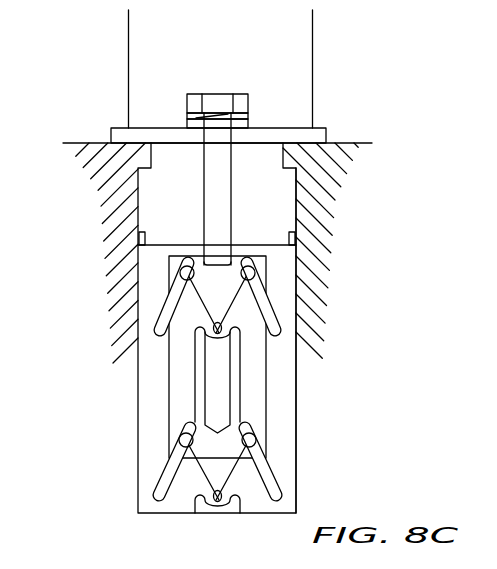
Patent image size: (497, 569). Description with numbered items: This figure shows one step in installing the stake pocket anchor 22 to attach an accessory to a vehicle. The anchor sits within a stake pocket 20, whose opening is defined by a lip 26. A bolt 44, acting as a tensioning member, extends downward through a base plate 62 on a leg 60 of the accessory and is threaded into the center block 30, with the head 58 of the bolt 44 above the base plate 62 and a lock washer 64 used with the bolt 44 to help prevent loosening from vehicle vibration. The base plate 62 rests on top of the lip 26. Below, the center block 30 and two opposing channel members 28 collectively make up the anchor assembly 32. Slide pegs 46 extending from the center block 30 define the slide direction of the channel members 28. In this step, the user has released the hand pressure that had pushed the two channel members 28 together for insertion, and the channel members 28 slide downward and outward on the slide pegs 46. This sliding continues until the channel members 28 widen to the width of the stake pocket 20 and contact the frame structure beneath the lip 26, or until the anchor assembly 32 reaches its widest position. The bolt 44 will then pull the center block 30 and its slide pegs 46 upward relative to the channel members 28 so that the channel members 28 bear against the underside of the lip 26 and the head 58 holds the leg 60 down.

The stake pocket anchor 22 is at (108, 64).
The leg 60 is at (313, 65).
The base plate 62 is at (317, 135).
The head 58 is at (214, 97).
The lock washer 64 is at (252, 124).
The bolt 44 is at (220, 198).
The lip 26 is at (153, 156).
The stake pocket 20 is at (187, 221).
The anchor assembly 32 is at (298, 397).
The center block 30 is at (183, 362).
The channel members 28 is at (150, 415).
The slide pegs 46 is at (188, 440).